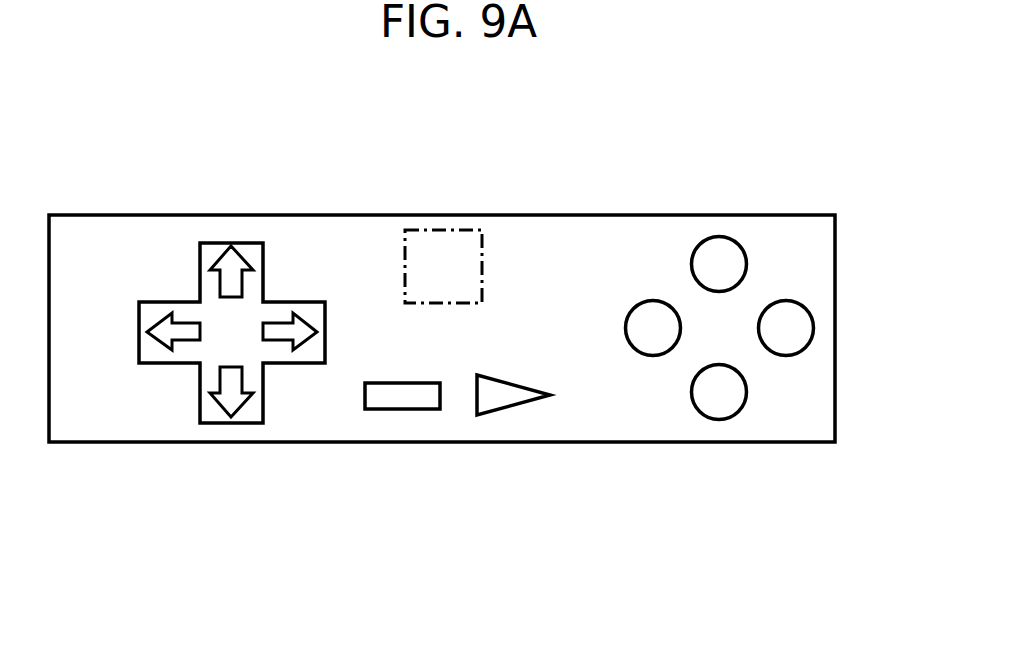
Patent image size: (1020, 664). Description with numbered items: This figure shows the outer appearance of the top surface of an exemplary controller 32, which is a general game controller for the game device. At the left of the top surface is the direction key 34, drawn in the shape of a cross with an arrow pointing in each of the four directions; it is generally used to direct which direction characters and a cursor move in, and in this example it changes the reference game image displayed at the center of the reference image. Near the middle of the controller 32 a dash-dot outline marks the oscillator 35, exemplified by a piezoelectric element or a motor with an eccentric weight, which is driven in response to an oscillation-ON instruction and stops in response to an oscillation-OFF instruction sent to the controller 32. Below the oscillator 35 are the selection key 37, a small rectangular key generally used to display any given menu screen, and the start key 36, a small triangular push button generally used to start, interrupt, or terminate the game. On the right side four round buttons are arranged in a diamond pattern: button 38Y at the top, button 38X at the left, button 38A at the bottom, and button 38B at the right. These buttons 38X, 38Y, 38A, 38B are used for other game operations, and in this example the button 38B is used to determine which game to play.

The controller 32 is at (120, 215).
The direction key 34 is at (265, 266).
The oscillator 35 is at (457, 230).
The start key 36 is at (512, 415).
The selection key 37 is at (405, 410).
The button 38Y is at (692, 264).
The button 38X is at (626, 328).
The button 38A is at (692, 392).
The button 38B is at (814, 324).